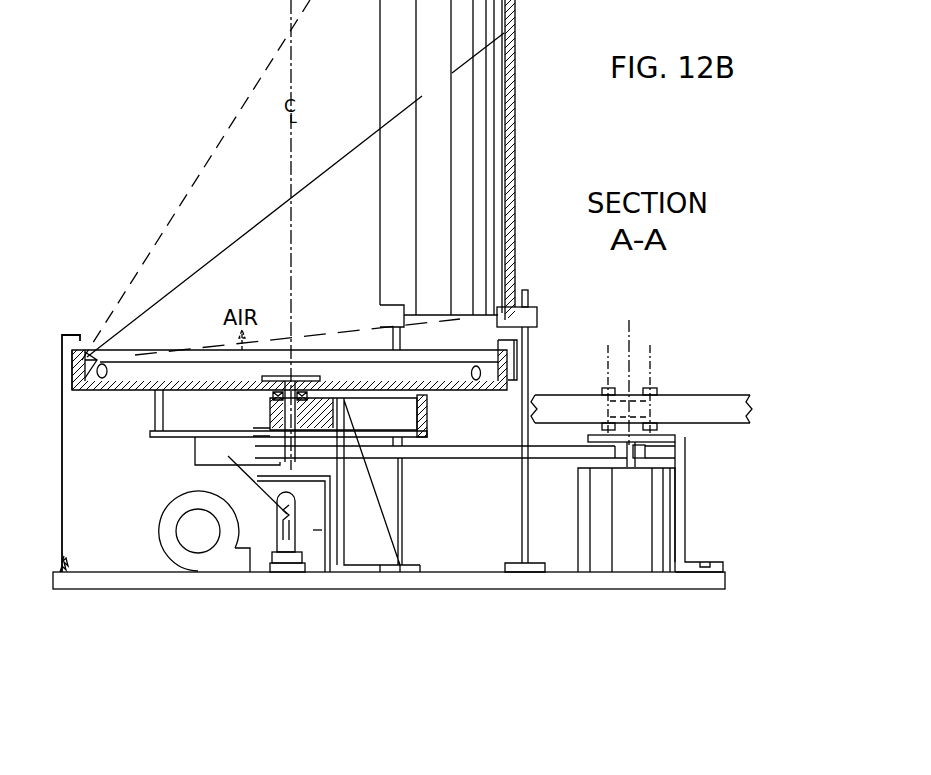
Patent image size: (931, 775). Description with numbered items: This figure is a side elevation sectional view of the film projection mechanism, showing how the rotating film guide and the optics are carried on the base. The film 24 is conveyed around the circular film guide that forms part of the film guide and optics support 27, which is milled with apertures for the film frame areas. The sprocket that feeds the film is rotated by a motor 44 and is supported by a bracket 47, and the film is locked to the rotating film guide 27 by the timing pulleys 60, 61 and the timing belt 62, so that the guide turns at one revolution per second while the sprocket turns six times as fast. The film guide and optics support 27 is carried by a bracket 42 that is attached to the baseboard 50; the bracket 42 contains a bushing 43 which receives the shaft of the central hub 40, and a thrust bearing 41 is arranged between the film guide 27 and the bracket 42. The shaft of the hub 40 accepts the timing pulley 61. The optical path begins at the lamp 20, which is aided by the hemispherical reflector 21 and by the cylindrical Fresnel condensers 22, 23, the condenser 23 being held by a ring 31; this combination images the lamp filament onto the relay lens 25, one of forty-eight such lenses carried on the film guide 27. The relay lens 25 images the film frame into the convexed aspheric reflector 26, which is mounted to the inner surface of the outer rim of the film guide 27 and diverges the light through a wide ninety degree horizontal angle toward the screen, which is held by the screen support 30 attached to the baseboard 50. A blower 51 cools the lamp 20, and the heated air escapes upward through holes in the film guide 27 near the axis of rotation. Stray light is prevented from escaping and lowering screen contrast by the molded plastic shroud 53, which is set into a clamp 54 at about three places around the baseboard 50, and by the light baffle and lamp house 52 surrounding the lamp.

The lamp 20 is at (278, 530).
The hemispherical reflector 21 is at (314, 530).
The cylindrical Fresnel condenser 22 is at (195, 465).
The cylindrical Fresnel condenser 23 is at (165, 410).
The film 24 is at (710, 394).
The relay lens 25 is at (108, 368).
The convexed aspheric reflector 26 is at (90, 353).
The film guide and optics support 27 is at (72, 375).
The screen support 30 is at (530, 360).
The ring 31 is at (150, 437).
The central hub 40 is at (275, 375).
The thrust bearing 41 is at (270, 394).
The bracket 42 is at (347, 418).
The bushing 43 is at (268, 426).
The motor 44 is at (578, 512).
The bracket 47 is at (686, 496).
The baseboard 50 is at (123, 590).
The blower 51 is at (158, 528).
The light baffle and lamp house 52 is at (329, 574).
The molded plastic shroud 53 is at (62, 472).
The clamp 54 is at (60, 566).
The timing pulley 60 is at (645, 452).
The timing pulley 61 is at (258, 464).
The timing belt 62 is at (455, 460).